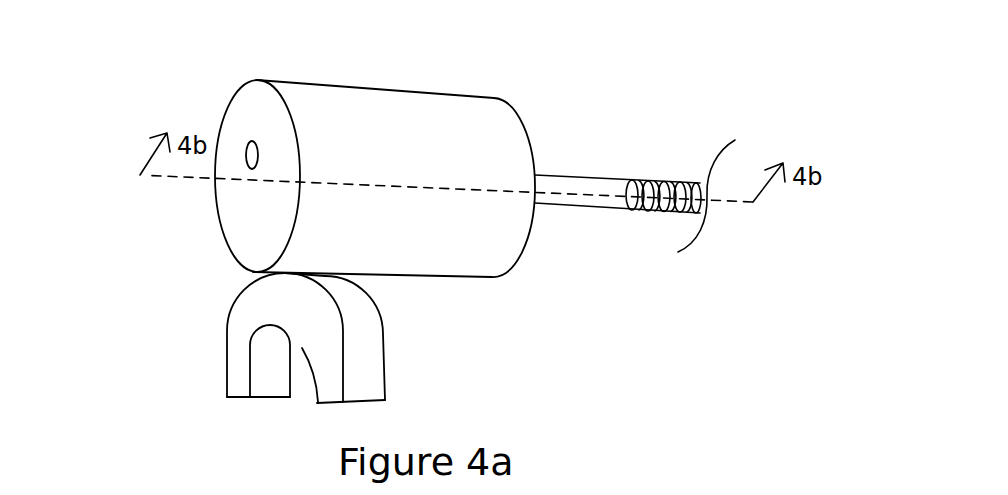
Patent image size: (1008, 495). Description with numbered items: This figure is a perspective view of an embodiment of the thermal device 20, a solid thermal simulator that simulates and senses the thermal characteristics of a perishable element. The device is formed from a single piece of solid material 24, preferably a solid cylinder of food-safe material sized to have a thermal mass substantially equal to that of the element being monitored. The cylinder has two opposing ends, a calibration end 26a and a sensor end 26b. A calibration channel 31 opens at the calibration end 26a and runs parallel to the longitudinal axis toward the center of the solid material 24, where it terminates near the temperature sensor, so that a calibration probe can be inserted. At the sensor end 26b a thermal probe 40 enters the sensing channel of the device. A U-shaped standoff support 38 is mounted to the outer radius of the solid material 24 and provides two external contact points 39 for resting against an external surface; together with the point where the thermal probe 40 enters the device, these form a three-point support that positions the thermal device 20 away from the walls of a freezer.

The thermal device 20 is at (488, 82).
The single piece of solid material 24 is at (417, 160).
The calibration end 26a is at (247, 120).
The sensor end 26b is at (528, 128).
The calibration channel 31 is at (245, 150).
The standoff support 38 is at (383, 357).
The external contact points 39 is at (377, 402).
The thermal probe 40 is at (602, 210).